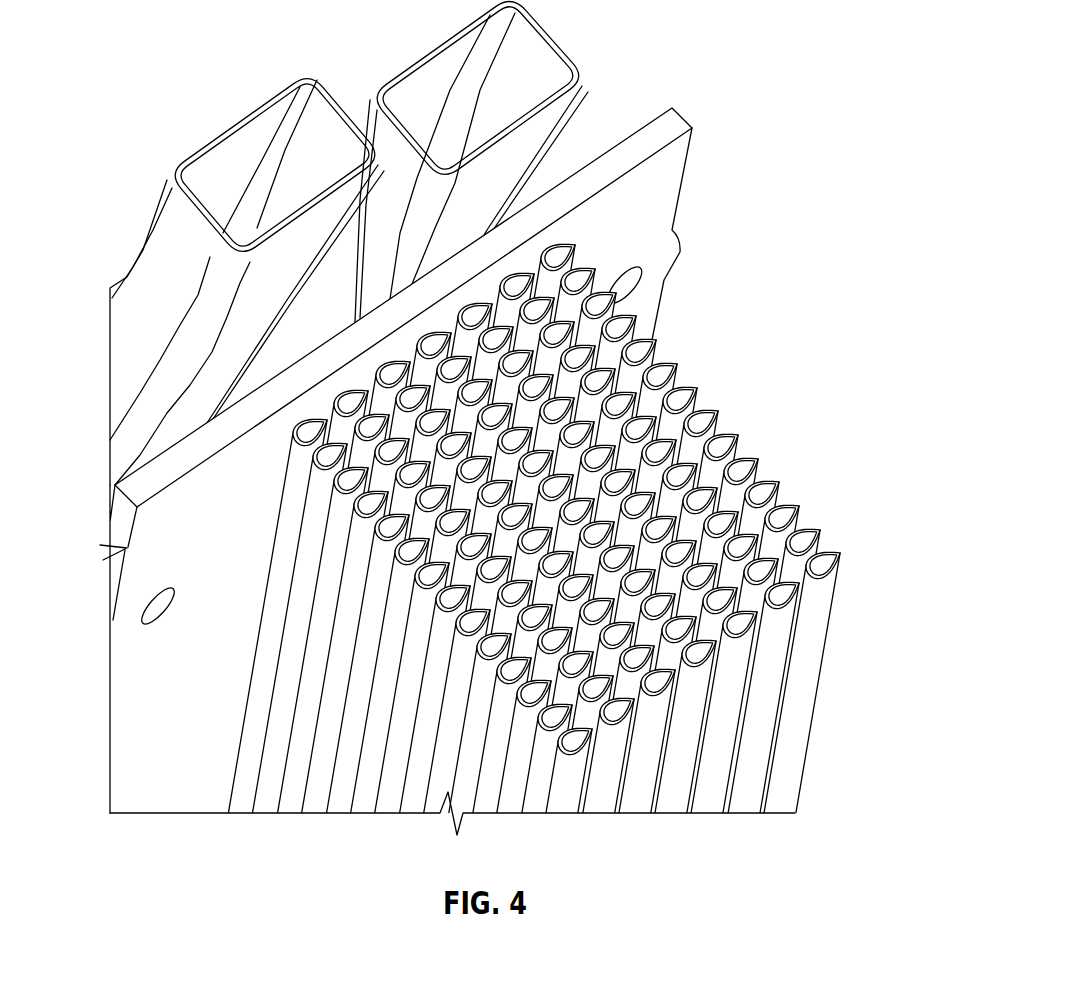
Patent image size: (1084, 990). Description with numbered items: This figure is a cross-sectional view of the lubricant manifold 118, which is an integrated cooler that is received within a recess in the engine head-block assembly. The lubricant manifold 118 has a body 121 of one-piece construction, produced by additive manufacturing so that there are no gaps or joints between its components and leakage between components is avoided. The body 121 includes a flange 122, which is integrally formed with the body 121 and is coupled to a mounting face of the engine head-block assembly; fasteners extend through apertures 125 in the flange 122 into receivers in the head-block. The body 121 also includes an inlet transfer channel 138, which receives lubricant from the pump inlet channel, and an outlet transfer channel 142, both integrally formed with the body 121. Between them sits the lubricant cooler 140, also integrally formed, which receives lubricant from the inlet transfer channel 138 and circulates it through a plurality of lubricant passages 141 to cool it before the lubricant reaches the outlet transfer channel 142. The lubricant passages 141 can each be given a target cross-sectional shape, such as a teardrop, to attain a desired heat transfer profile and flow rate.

The lubricant manifold 118 is at (693, 117).
The body 121 is at (321, 243).
The flange 122 is at (158, 803).
The apertures 125 is at (163, 595).
The inlet transfer channel 138 is at (232, 143).
The lubricant cooler 140 is at (568, 617).
The lubricant passages 141 is at (652, 348).
The outlet transfer channel 142 is at (417, 87).